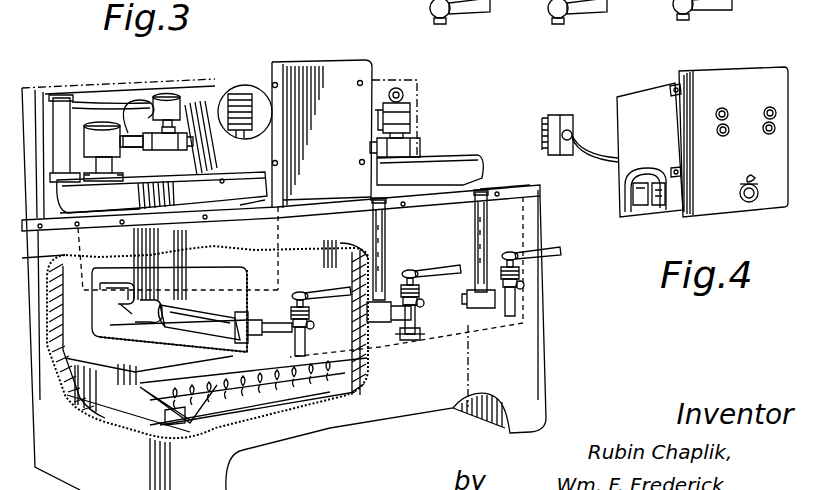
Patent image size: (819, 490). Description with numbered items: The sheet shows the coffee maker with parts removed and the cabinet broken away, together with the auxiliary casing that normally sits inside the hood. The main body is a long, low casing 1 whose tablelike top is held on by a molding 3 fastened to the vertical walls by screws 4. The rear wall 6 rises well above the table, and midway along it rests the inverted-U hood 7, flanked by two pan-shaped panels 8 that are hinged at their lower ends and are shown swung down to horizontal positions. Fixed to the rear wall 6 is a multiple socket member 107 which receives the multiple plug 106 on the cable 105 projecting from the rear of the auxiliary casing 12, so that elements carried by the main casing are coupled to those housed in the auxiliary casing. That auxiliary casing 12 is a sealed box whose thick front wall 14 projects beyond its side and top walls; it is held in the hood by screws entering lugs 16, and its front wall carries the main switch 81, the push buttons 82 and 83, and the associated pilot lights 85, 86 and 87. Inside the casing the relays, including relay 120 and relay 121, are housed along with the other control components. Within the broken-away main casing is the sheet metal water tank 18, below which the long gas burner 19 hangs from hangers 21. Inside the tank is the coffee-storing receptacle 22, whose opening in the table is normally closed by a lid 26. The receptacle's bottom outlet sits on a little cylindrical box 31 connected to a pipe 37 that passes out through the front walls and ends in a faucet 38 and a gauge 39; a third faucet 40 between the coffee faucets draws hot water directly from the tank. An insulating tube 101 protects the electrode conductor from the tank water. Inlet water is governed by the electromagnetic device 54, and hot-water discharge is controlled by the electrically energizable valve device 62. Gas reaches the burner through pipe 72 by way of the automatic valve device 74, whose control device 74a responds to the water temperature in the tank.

In FIG. 3, the casing 1 is at (543, 203).
In FIG. 3, the molding 3 is at (506, 189).
In FIG. 3, the screws 4 is at (300, 207).
In FIG. 3, the rear wall 6 is at (112, 93).
In FIG. 3, the hood 7 is at (331, 62).
In FIG. 3, the pan-shaped panels 8 is at (31, 86).
In FIG. 4, the auxiliary casing 12 is at (632, 100).
In FIG. 4, the front wall 14 is at (735, 73).
In FIG. 4, the lugs 16 is at (676, 85).
In FIG. 3, the tank 18 is at (110, 363).
In FIG. 3, the gas burner 19 is at (323, 392).
In FIG. 3, the hangers 21 is at (190, 424).
In FIG. 3, the receptacle 22 is at (270, 277).
In FIG. 3, the lid 26 is at (218, 206).
In FIG. 3, the box 31 is at (145, 318).
In FIG. 3, the pipe 37 is at (200, 320).
In FIG. 3, the faucet 38 is at (310, 333).
In FIG. 3, the gauge 39 is at (387, 248).
In FIG. 3, the third faucet 40 is at (417, 336).
In FIG. 3, the electromagnetic device 54 is at (98, 125).
In FIG. 3, the electrically energizable valve device 62 is at (168, 100).
In FIG. 3, the pipe 72 is at (421, 152).
In FIG. 3, the valve device 74 is at (411, 120).
In FIG. 3, the control device 74a is at (404, 92).
In FIG. 4, the main switch 81 is at (739, 196).
In FIG. 4, the push button 82 is at (723, 136).
In FIG. 4, the push button 83 is at (768, 135).
In FIG. 4, the pilot light 85 is at (752, 203).
In FIG. 4, the pilot light 86 is at (722, 107).
In FIG. 4, the pilot light 87 is at (770, 107).
In FIG. 3, the tube 101 is at (130, 310).
In FIG. 4, the cable 105 is at (588, 148).
In FIG. 4, the multiple plug 106 is at (552, 115).
In FIG. 3, the multiple socket member 107 is at (240, 94).
In FIG. 4, the relay 120 is at (640, 210).
In FIG. 4, the relay 121 is at (658, 208).